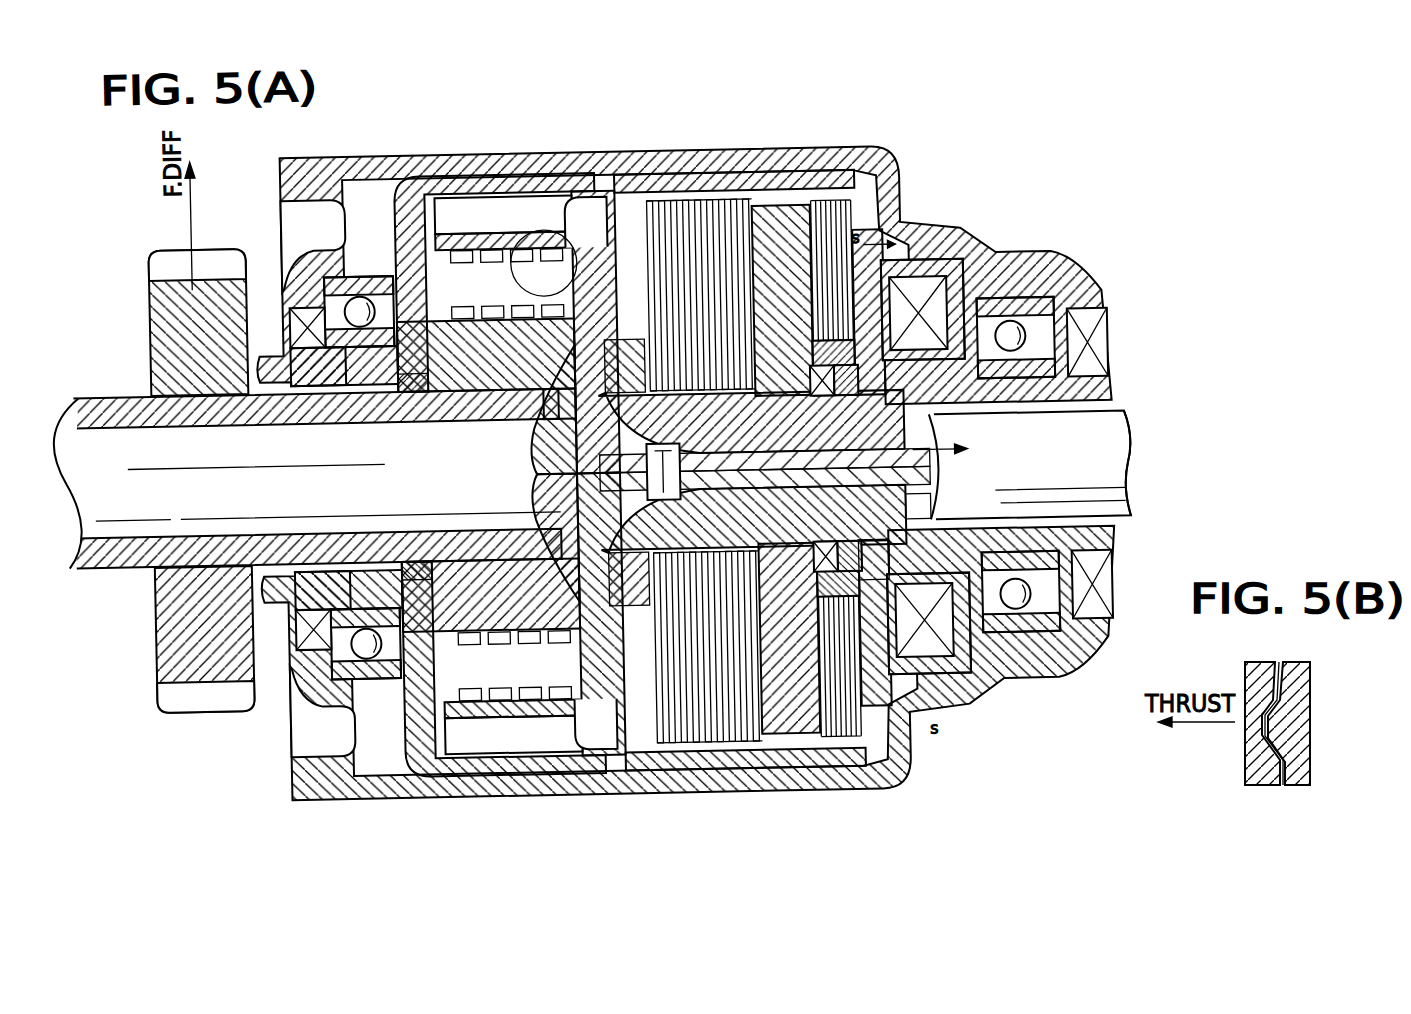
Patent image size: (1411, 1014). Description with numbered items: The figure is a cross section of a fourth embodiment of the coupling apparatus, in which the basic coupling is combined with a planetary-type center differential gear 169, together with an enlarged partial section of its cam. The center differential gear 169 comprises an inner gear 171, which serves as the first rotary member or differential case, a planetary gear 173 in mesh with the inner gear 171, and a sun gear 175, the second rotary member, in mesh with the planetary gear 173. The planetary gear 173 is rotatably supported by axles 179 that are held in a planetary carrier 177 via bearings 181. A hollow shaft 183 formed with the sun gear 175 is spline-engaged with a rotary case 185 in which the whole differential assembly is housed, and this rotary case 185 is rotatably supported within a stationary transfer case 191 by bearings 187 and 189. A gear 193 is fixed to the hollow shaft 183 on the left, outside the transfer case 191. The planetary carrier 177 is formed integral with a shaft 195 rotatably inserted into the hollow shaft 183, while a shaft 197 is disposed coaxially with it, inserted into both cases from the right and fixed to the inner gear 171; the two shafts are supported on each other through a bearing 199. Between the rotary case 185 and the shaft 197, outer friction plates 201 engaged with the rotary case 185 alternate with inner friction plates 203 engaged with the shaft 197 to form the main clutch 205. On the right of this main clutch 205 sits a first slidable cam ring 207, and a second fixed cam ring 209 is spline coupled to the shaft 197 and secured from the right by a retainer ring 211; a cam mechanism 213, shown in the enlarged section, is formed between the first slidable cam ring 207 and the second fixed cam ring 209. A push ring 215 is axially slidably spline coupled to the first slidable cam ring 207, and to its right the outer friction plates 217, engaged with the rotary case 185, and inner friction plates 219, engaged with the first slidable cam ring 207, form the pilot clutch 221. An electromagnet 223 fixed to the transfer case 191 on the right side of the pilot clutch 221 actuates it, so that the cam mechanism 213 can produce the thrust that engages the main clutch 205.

In FIG. 5A, the center differential gear 169 is at (558, 147).
In FIG. 5A, the inner gear 171 is at (477, 216).
In FIG. 5A, the planetary gear 173 is at (560, 219).
In FIG. 5A, the sun gear 175 is at (430, 423).
In FIG. 5A, the planetary carrier 177 is at (545, 400).
In FIG. 5A, the axles 179 is at (482, 252).
In FIG. 5A, the bearings 181 is at (537, 249).
In FIG. 5A, the hollow shaft 183 is at (410, 388).
In FIG. 5A, the rotary case 185 is at (672, 180).
In FIG. 5A, the bearing 187 is at (332, 382).
In FIG. 5A, the bearing 189 is at (1022, 464).
In FIG. 5A, the transfer case 191 is at (323, 168).
In FIG. 5A, the gear 193 is at (165, 263).
In FIG. 5A, the shaft 195 is at (120, 430).
In FIG. 5A, the shaft 197 is at (1120, 479).
In FIG. 5A, the bearing 199 is at (640, 514).
In FIG. 5A, the outer friction plates 201 is at (722, 205).
In FIG. 5A, the inner friction plates 203 is at (762, 400).
In FIG. 5A, the main clutch 205 is at (645, 814).
In FIG. 5A, the first slidable cam ring 207 is at (813, 403).
In FIG. 5B, the first slidable cam ring 207 is at (1243, 777).
In FIG. 5A, the second fixed cam ring 209 is at (868, 378).
In FIG. 5B, the second fixed cam ring 209 is at (1290, 765).
In FIG. 5A, the retainer ring 211 is at (866, 546).
In FIG. 5A, the cam mechanism 213 is at (820, 556).
In FIG. 5B, the cam mechanism 213 is at (1256, 795).
In FIG. 5A, the push ring 215 is at (772, 802).
In FIG. 5A, the outer friction plates 217 is at (905, 772).
In FIG. 5A, the inner friction plates 219 is at (932, 517).
In FIG. 5A, the pilot clutch 221 is at (828, 775).
In FIG. 5A, the electromagnet 223 is at (930, 675).